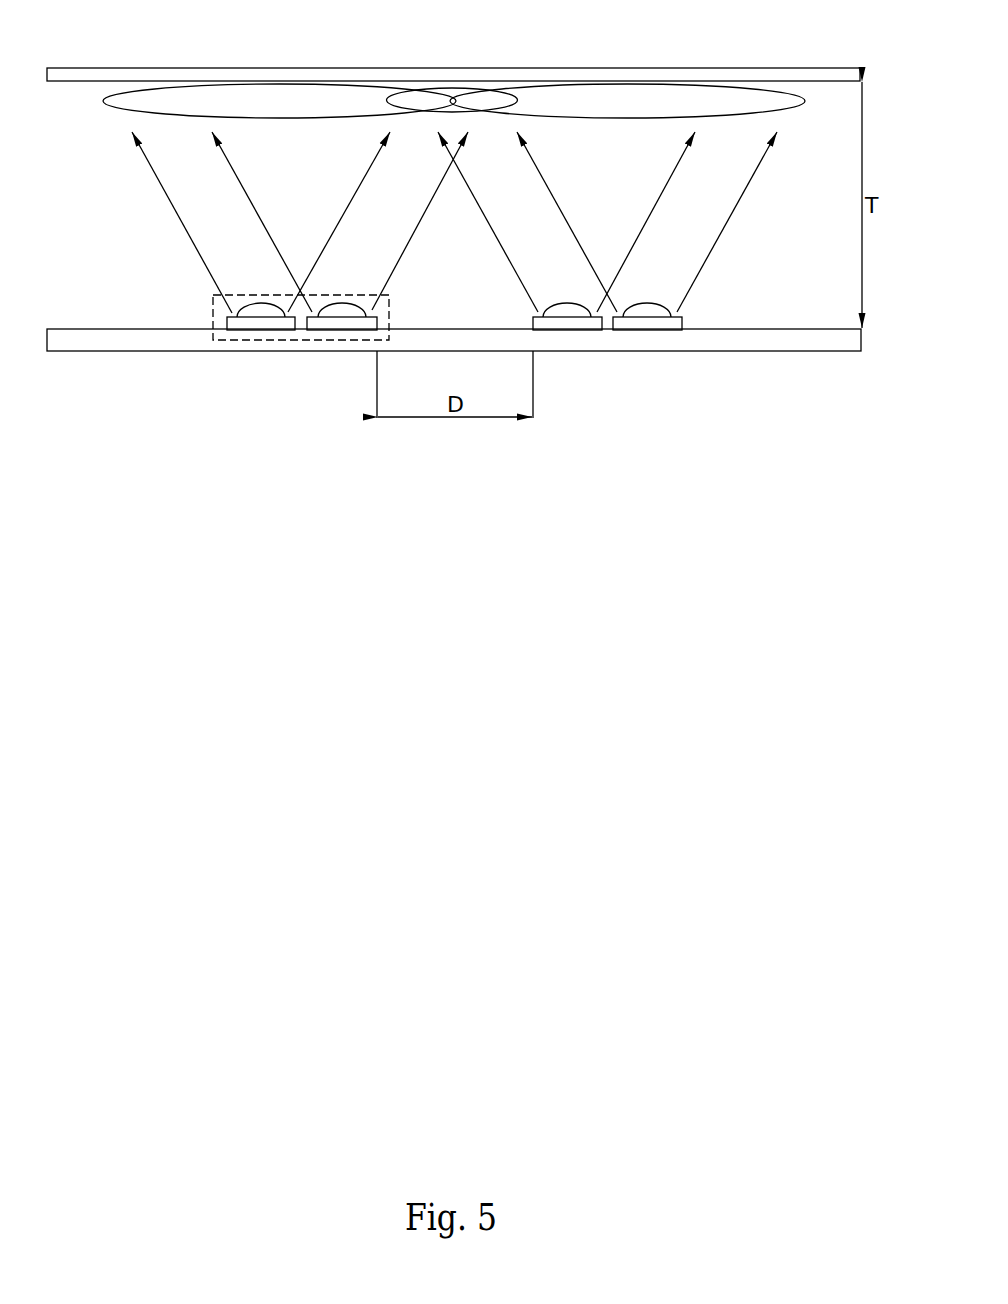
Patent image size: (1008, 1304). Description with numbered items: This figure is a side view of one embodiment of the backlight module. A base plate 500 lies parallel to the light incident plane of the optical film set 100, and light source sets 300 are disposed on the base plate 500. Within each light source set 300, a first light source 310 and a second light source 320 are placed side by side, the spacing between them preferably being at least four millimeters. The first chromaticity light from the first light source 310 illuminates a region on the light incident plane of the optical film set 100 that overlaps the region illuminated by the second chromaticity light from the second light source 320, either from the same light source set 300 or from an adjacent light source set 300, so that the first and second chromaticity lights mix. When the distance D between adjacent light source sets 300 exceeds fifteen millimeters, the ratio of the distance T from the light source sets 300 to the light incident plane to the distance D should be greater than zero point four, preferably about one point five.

The optical film set 100 is at (763, 76).
The light source set 300 is at (213, 308).
The first light source 310 is at (262, 323).
The second light source 320 is at (342, 322).
The base plate 500 is at (767, 342).